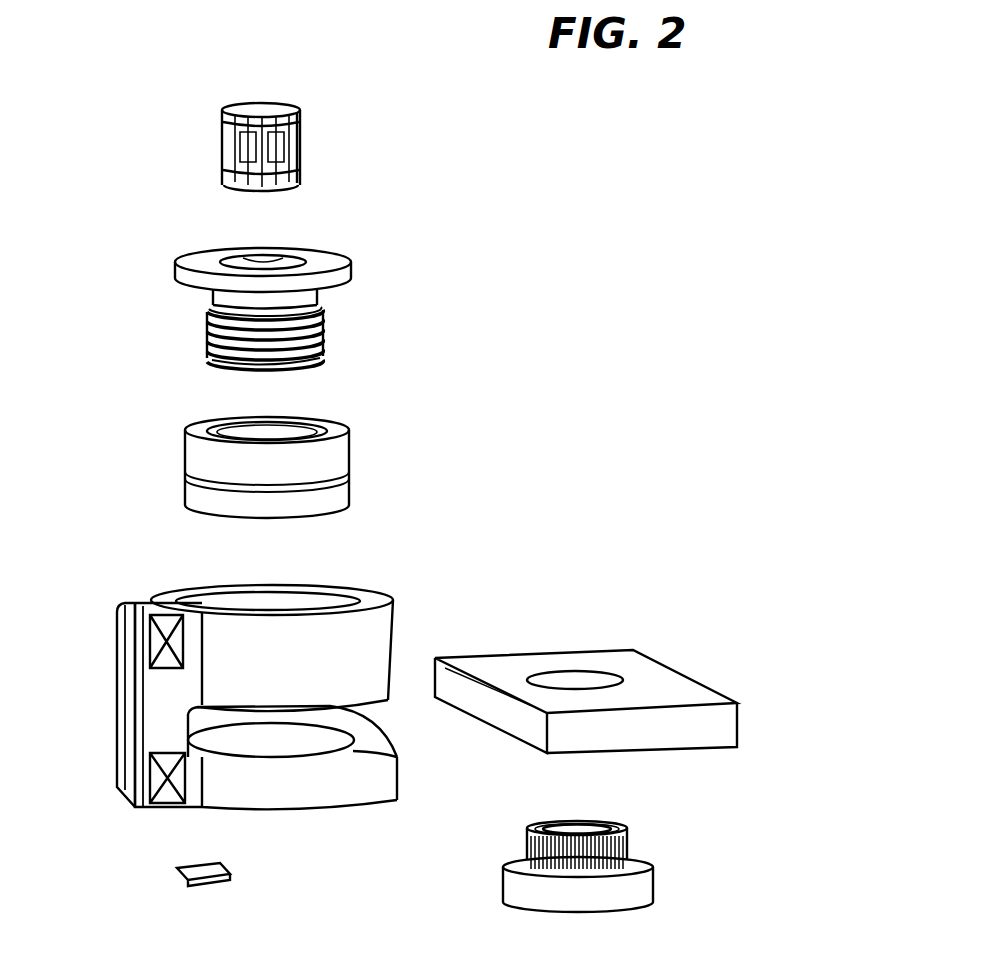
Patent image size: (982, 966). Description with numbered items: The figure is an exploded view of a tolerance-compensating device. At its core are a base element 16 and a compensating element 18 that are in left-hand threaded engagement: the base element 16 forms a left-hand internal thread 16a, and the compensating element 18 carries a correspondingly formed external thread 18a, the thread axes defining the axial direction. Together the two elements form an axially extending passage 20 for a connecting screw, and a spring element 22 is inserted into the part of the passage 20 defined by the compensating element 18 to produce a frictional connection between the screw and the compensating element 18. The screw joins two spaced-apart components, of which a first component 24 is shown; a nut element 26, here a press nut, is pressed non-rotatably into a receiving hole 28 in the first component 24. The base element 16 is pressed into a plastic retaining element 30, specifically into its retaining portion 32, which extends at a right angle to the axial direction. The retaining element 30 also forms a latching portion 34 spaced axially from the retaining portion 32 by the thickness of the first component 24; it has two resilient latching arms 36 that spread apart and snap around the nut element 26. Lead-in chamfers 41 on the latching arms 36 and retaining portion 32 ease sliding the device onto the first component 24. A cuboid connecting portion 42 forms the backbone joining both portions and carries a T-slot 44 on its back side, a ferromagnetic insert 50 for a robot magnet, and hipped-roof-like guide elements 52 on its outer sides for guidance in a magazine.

The base element 16 is at (309, 448).
The internal thread 16a is at (302, 428).
The compensating element 18 is at (307, 270).
The external thread 18a is at (323, 342).
The passage 20 is at (262, 243).
The spring element 22 is at (300, 127).
The first component 24 is at (596, 701).
The nut element 26 is at (653, 887).
The receiving hole 28 is at (578, 680).
The retaining element 30 is at (258, 727).
The retaining portion 32 is at (230, 590).
The latching portion 34 is at (263, 808).
The latching arms 36 is at (332, 788).
The lead-in chamfers 41 is at (383, 700).
The connecting portion 42 is at (119, 755).
The T-slot 44 is at (177, 615).
The insert 50 is at (203, 885).
The guide elements 52 is at (173, 637).